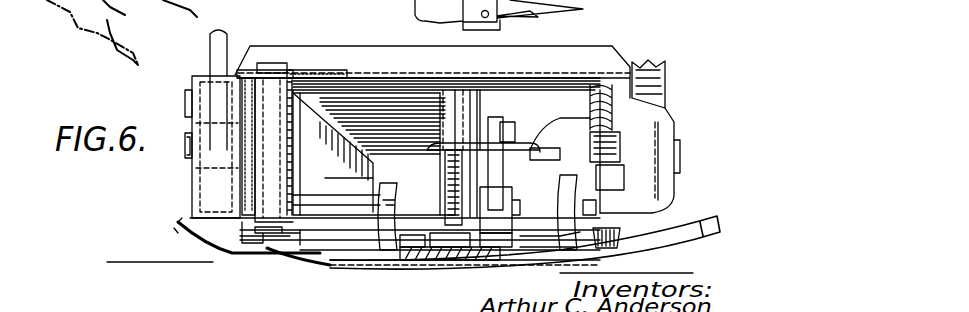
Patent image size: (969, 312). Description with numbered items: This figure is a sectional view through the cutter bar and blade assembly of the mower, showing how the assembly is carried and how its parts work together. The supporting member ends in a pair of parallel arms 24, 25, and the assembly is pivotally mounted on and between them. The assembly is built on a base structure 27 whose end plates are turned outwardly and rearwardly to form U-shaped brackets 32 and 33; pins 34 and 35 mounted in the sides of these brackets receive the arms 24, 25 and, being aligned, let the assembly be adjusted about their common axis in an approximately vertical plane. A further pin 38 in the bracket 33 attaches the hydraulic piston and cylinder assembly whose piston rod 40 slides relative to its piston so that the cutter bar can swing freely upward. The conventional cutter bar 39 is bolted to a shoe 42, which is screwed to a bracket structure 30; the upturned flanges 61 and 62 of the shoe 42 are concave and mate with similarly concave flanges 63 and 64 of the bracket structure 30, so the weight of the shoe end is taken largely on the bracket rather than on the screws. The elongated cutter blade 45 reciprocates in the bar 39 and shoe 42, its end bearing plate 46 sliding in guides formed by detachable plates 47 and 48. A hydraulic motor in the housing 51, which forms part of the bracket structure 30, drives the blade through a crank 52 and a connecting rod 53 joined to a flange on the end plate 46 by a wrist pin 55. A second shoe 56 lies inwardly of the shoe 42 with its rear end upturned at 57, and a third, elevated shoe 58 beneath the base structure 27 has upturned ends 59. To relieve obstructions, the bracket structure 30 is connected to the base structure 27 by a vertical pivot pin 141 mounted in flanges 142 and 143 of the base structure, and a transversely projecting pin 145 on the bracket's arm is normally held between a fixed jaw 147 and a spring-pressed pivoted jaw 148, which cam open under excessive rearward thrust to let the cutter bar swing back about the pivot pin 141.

The arm 24 is at (655, 72).
The arm 25 is at (205, 172).
The base structure 27 is at (604, 44).
The bracket structure 30 is at (369, 152).
The U-shaped bracket 32 is at (658, 118).
The U-shaped bracket 33 is at (212, 95).
The pin 34 is at (681, 152).
The pin 35 is at (186, 145).
The pin 38 is at (186, 100).
The cutter bar 39 is at (404, 250).
The piston rod 40 is at (214, 40).
The shoe 42 is at (705, 222).
The cutter blade 45 is at (500, 250).
The end bearing plate 46 is at (508, 250).
The detachable plate 47 is at (438, 248).
The detachable plate 48 is at (544, 240).
The housing 51 is at (365, 98).
The crank 52 is at (548, 155).
The connecting rod 53 is at (498, 182).
The wrist pin 55 is at (514, 220).
The second shoe 56 is at (344, 262).
The upturned end 57 is at (275, 260).
The third shoe 58 is at (230, 255).
The upturned ends 59 is at (180, 232).
The upturned flange 61 is at (640, 204).
The upturned flange 62 is at (380, 202).
The mating flange 63 is at (575, 203).
The mating flange 64 is at (376, 232).
The vertical pivot pin 141 is at (272, 63).
The flange 142 is at (247, 72).
The flange 143 is at (235, 236).
The pin 145 is at (577, 135).
The fixed jaw 147 is at (606, 182).
The pivoted jaw 148 is at (622, 140).